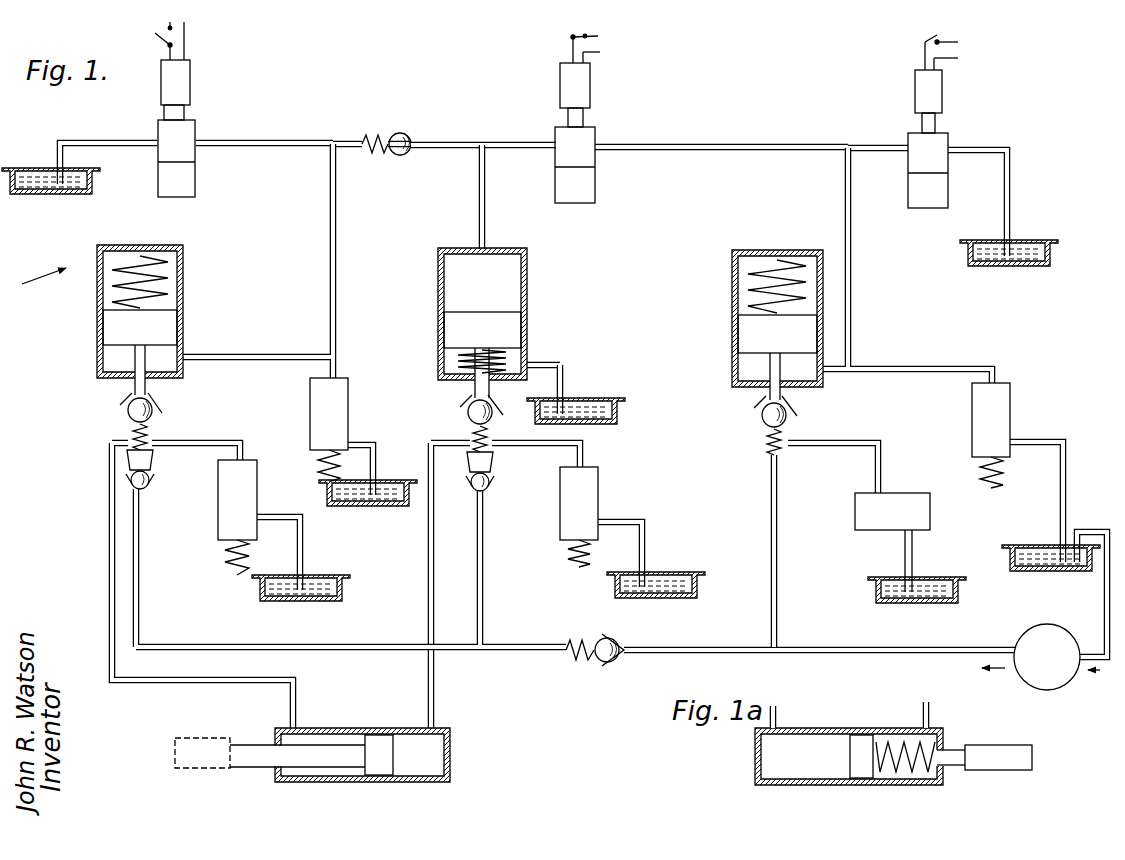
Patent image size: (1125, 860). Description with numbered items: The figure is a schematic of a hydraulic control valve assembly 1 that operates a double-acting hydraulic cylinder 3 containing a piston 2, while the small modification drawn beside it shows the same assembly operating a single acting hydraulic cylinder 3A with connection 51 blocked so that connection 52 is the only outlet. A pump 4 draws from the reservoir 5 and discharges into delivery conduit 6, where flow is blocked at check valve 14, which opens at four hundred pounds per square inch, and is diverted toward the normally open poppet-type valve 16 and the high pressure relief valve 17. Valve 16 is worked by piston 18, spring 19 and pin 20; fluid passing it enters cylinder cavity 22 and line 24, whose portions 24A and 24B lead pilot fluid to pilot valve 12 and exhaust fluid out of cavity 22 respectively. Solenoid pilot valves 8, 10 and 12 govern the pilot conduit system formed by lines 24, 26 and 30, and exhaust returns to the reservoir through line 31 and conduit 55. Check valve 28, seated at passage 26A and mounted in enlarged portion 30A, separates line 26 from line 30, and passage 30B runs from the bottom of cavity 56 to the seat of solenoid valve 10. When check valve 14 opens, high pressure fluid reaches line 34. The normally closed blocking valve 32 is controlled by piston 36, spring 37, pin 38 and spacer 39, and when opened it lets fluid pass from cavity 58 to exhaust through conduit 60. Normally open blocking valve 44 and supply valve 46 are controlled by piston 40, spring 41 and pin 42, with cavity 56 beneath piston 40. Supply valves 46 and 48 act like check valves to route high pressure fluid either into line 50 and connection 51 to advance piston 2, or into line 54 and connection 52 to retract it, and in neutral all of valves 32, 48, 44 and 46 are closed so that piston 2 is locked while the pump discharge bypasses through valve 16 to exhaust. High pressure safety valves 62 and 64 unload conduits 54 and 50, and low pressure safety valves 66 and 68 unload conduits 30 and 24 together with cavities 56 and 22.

In FIG. 1, the valve assembly 1 is at (33, 281).
In FIG. 1, the piston 2 is at (381, 775).
In FIG. 1A, the piston 2 is at (861, 756).
In FIG. 1, the hydraulic cylinder 3 is at (452, 777).
In FIG. 1A, the single acting hydraulic cylinder 3A is at (975, 786).
In FIG. 1, the pump 4 is at (1052, 690).
In FIG. 1, the reservoir 5 is at (55, 194).
In FIG. 1, the delivery conduit 6 is at (772, 656).
In FIG. 1, the solenoid valve 8 is at (948, 100).
In FIG. 1, the solenoid valve 10 is at (192, 80).
In FIG. 1, the solenoid valve 12 is at (597, 81).
In FIG. 1, the check valve 14 is at (597, 638).
In FIG. 1, the high pressure control poppet-type valve 16 is at (788, 414).
In FIG. 1, the high pressure relief valve 17 is at (892, 490).
In FIG. 1, the piston 18 is at (745, 328).
In FIG. 1, the spring 19 is at (775, 255).
In FIG. 1, the pin 20 is at (786, 398).
In FIG. 1, the cylinder cavity 22 is at (750, 363).
In FIG. 1, the line 24 is at (842, 168).
In FIG. 1, the conduit portion 24A is at (742, 146).
In FIG. 1, the conduit portion 24B is at (870, 146).
In FIG. 1, the line 26 is at (478, 163).
In FIG. 1, the passage 26A is at (447, 142).
In FIG. 1, the check valve 28 is at (383, 138).
In FIG. 1, the line 30 is at (330, 180).
In FIG. 1, the enlarged portion 30A is at (345, 141).
In FIG. 1, the passage 30B is at (300, 141).
In FIG. 1, the line 31 is at (1012, 172).
In FIG. 1, the high pressure blocking valve 32 is at (466, 418).
In FIG. 1, the line 34 is at (455, 650).
In FIG. 1, the piston 36 is at (446, 322).
In FIG. 1, the spring 37 is at (446, 360).
In FIG. 1, the pin 38 is at (468, 386).
In FIG. 1, the spacer 39 is at (495, 462).
In FIG. 1, the piston 40 is at (177, 332).
In FIG. 1, the spring 41 is at (185, 258).
In FIG. 1, the pin 42 is at (152, 405).
In FIG. 1, the high pressure blocking valve 44 is at (127, 413).
In FIG. 1, the supply control valve 46 is at (152, 478).
In FIG. 1, the supply control valve 48 is at (490, 484).
In FIG. 1, the line 50 is at (436, 565).
In FIG. 1, the connection 51 is at (437, 722).
In FIG. 1A, the connection 51 is at (922, 718).
In FIG. 1, the connection 52 is at (298, 725).
In FIG. 1A, the connection 52 is at (778, 724).
In FIG. 1, the line 54 is at (116, 684).
In FIG. 1, the conduit 55 is at (88, 142).
In FIG. 1, the cylinder cavity 56 is at (100, 365).
In FIG. 1, the cavity 58 is at (540, 350).
In FIG. 1, the conduit 60 is at (566, 385).
In FIG. 1, the high pressure safety valve 62 is at (218, 500).
In FIG. 1, the high pressure safety valve 64 is at (562, 500).
In FIG. 1, the low pressure safety valve 66 is at (312, 405).
In FIG. 1, the low pressure safety valve 68 is at (975, 405).